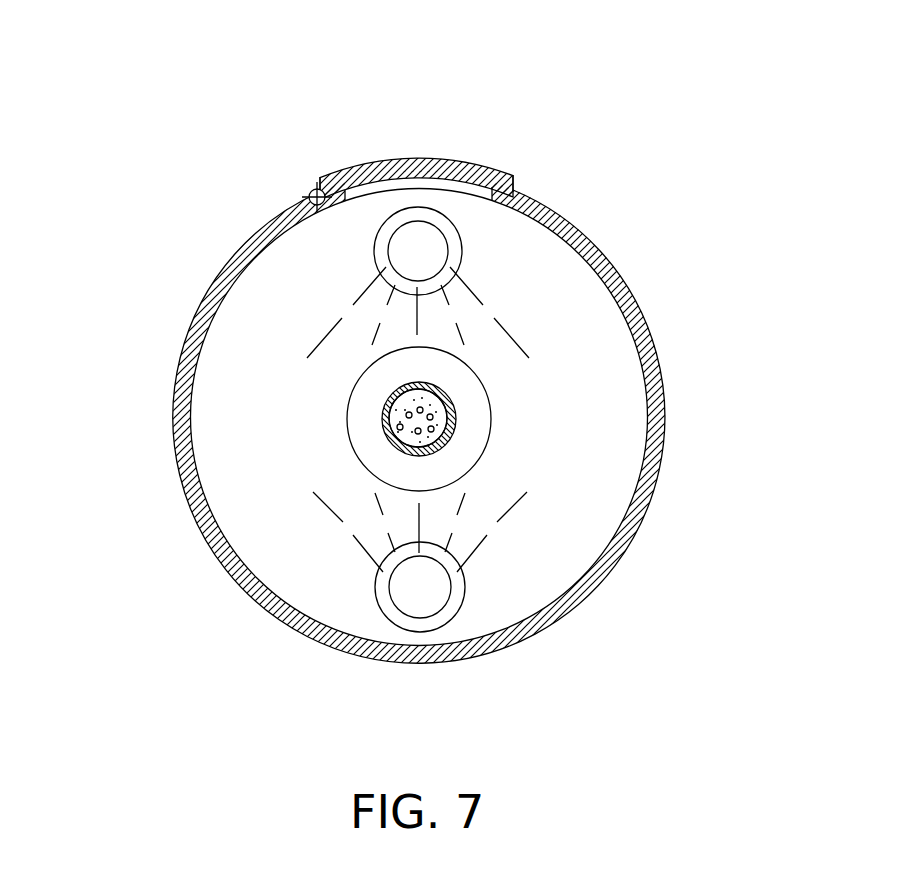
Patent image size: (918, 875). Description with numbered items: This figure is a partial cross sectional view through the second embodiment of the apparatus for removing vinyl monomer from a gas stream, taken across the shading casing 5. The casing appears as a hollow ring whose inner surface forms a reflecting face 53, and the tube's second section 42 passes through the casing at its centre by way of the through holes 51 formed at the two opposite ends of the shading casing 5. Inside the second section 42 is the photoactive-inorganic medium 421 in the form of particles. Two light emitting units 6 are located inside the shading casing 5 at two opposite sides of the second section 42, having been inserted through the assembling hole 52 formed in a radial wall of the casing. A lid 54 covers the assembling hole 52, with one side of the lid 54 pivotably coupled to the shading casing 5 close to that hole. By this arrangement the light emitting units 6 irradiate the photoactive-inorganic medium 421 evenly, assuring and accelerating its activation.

The shading casing 5 is at (256, 185).
The assembling hole 52 is at (380, 176).
The lid 54 is at (447, 163).
The light emitting units 6 is at (382, 252).
The reflecting face 53 is at (590, 264).
The second section 42 is at (382, 403).
The photoactive-inorganic medium 421 is at (400, 428).
The through holes 51 is at (491, 432).